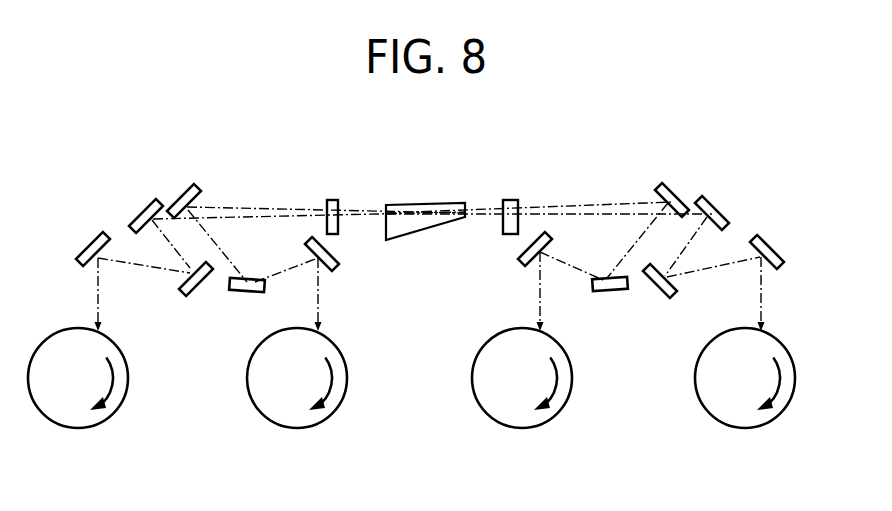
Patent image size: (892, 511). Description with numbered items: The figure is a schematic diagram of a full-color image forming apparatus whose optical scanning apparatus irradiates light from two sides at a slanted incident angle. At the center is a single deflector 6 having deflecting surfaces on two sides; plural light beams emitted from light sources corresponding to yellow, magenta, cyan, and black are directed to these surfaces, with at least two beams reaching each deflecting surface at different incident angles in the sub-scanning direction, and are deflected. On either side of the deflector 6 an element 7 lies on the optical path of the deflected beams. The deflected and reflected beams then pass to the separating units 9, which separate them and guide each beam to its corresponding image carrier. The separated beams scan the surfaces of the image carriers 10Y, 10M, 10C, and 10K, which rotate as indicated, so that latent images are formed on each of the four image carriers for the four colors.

The deflector 6 is at (427, 203).
The lens 7 is at (334, 200).
The separating unit 9 is at (678, 189).
The image carrier 10K is at (138, 330).
The image carrier 10C is at (357, 330).
The image carrier 10M is at (582, 330).
The image carrier 10Y is at (786, 348).